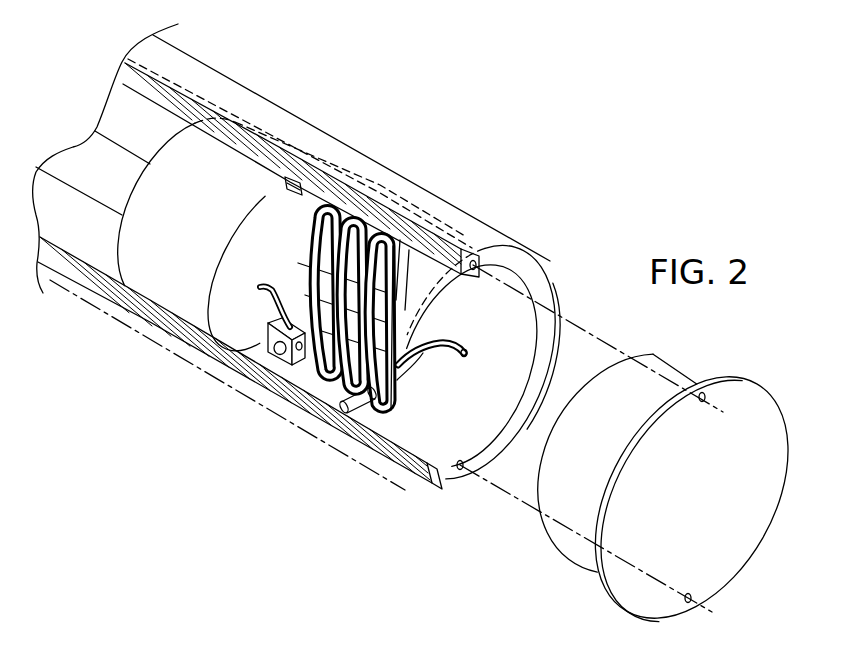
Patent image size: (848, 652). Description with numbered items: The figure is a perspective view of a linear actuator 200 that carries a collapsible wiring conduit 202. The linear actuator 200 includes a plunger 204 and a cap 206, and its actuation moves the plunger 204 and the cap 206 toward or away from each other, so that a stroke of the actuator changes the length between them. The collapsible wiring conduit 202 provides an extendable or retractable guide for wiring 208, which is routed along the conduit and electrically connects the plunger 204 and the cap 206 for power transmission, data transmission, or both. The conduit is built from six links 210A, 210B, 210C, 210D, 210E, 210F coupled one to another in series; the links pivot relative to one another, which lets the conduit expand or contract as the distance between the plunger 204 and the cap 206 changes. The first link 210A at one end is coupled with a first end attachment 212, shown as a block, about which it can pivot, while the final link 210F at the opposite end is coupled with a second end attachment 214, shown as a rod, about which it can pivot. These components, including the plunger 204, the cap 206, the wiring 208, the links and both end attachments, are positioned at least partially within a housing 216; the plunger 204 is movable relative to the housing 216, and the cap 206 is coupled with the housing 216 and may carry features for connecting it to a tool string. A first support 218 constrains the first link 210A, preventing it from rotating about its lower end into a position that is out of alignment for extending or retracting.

The linear actuator 200 is at (520, 212).
The collapsible wiring conduit 202 is at (328, 394).
The plunger 204 is at (170, 297).
The cap 206 is at (612, 578).
The wiring 208 is at (447, 348).
The first link 210A is at (335, 200).
The link 210B is at (347, 212).
The link 210C is at (366, 222).
The link 210D is at (379, 235).
The link 210E is at (400, 240).
The final link 210F is at (409, 250).
The first end attachment 212 is at (265, 343).
The second end attachment 214 is at (410, 375).
The housing 216 is at (442, 482).
The first support 218 is at (285, 182).